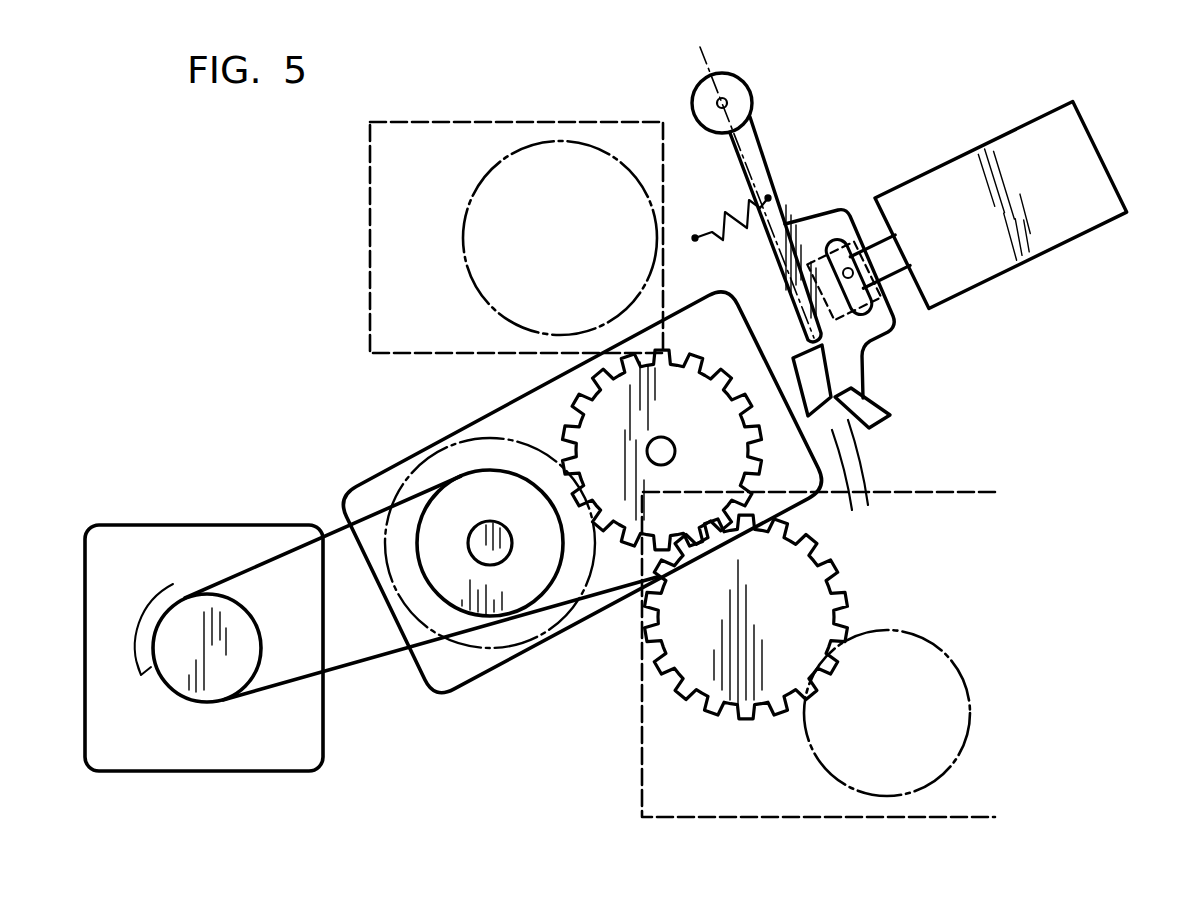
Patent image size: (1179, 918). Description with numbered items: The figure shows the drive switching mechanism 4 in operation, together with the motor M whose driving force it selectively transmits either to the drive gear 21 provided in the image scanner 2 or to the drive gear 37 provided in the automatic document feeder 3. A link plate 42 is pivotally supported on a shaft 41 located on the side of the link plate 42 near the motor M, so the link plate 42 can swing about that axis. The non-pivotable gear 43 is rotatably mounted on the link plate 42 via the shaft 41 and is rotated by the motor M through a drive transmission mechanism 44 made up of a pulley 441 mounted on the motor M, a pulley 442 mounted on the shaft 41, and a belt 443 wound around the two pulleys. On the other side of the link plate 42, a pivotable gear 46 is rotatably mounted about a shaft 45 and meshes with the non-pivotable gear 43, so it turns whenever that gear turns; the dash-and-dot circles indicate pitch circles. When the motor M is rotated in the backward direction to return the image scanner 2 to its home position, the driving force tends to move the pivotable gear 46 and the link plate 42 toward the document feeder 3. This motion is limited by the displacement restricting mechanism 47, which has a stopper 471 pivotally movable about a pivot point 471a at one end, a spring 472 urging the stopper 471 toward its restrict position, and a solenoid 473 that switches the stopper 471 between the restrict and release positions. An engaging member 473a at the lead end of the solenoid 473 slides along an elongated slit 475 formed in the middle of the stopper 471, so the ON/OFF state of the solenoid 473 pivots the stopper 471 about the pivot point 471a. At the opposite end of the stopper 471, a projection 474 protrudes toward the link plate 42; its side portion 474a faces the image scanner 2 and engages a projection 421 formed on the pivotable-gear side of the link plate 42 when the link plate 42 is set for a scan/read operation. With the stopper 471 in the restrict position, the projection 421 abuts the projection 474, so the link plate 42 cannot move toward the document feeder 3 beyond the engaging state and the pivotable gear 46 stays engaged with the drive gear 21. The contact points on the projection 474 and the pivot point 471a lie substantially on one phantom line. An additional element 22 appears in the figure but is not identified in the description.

The image scanner 2 is at (641, 792).
The automatic document feeder 3 is at (512, 120).
The drive switching mechanism 4 is at (170, 410).
The drive gear 21 is at (702, 710).
The roller 22 is at (828, 766).
The drive gear 37 is at (464, 240).
The shaft 41 is at (486, 538).
The link plate 42 is at (354, 497).
The non-pivotable gear 43 is at (483, 440).
The drive transmission mechanism 44 is at (378, 642).
The shaft 45 is at (668, 440).
The pivotable gear 46 is at (562, 425).
The displacement restricting mechanism 47 is at (958, 135).
The pulley 441 is at (350, 742).
The pulley 442 is at (512, 612).
The belt 443 is at (385, 660).
The stopper 471 is at (826, 215).
The pivot point 471a is at (728, 103).
The spring 472 is at (716, 230).
The solenoid 473 is at (1034, 245).
The engaging member 473a is at (865, 237).
The projection 474 is at (793, 395).
The side portion 474a is at (838, 392).
The elongated hole 475 is at (880, 298).
The projection 421 is at (859, 480).
The motor M is at (192, 770).